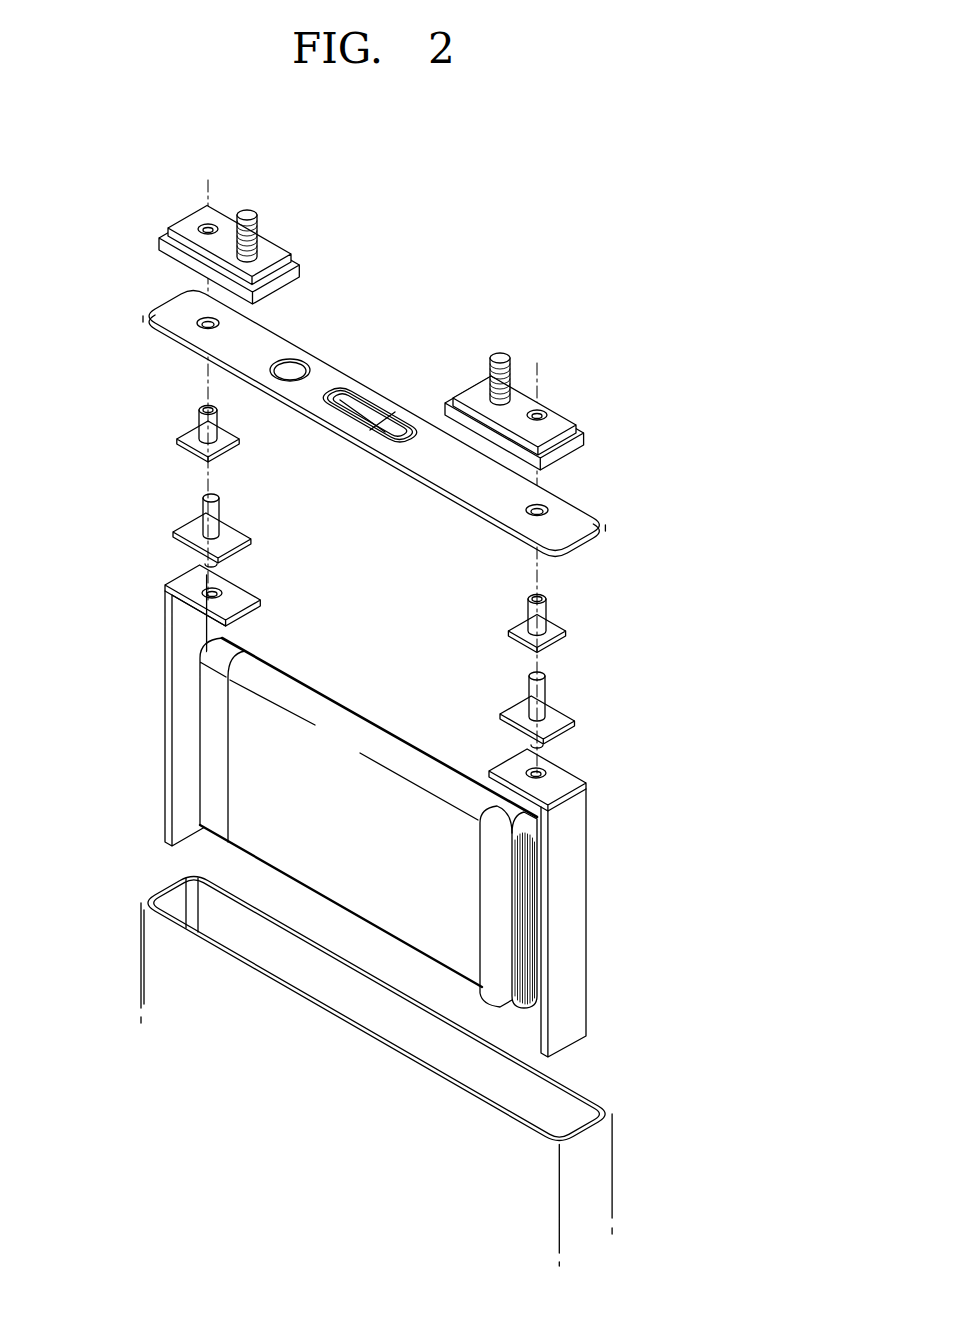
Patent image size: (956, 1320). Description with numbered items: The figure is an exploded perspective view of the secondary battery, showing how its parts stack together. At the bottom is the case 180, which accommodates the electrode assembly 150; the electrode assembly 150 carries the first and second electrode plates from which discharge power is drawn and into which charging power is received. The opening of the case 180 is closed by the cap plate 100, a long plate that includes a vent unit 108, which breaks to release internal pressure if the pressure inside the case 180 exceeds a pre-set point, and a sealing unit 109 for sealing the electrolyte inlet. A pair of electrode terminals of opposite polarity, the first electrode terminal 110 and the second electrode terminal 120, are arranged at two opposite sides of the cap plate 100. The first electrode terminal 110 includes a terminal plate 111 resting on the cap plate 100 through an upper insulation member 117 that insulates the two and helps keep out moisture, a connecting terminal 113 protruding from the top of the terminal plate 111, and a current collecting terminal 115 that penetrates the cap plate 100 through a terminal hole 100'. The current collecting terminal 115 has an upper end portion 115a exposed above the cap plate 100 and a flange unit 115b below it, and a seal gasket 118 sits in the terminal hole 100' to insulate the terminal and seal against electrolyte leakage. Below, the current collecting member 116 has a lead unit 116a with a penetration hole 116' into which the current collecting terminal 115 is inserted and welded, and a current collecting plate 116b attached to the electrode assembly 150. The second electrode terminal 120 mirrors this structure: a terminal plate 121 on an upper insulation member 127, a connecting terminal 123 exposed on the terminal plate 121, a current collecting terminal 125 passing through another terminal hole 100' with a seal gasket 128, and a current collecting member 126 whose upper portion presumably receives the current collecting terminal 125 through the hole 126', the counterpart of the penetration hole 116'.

The cap plate 100 is at (343, 406).
The terminal hole 100' is at (369, 417).
The vent unit 108 is at (368, 410).
The sealing unit 109 is at (290, 368).
The first electrode terminal 110 is at (565, 379).
The terminal plate 111 is at (483, 383).
The connecting terminal 113 is at (502, 358).
The upper insulation member 117 is at (590, 427).
The seal gasket 118 is at (563, 617).
The current collecting terminal 115 is at (608, 701).
The upper end portion 115a is at (550, 697).
The flange unit 115b is at (577, 730).
The current collecting member 116 is at (614, 903).
The lead unit 116a is at (560, 787).
The current collecting plate 116b is at (570, 919).
The penetration hole 116' is at (599, 772).
The second electrode terminal 120 is at (273, 225).
The terminal plate 121 is at (193, 225).
The connecting terminal 123 is at (249, 212).
The upper insulation member 127 is at (297, 263).
The seal gasket 128 is at (192, 437).
The current collecting terminal 125 is at (183, 527).
The current collecting member 126 is at (170, 705).
The hole of bracket 126' is at (257, 569).
The electrode assembly 150 is at (352, 725).
The case 180 is at (153, 890).